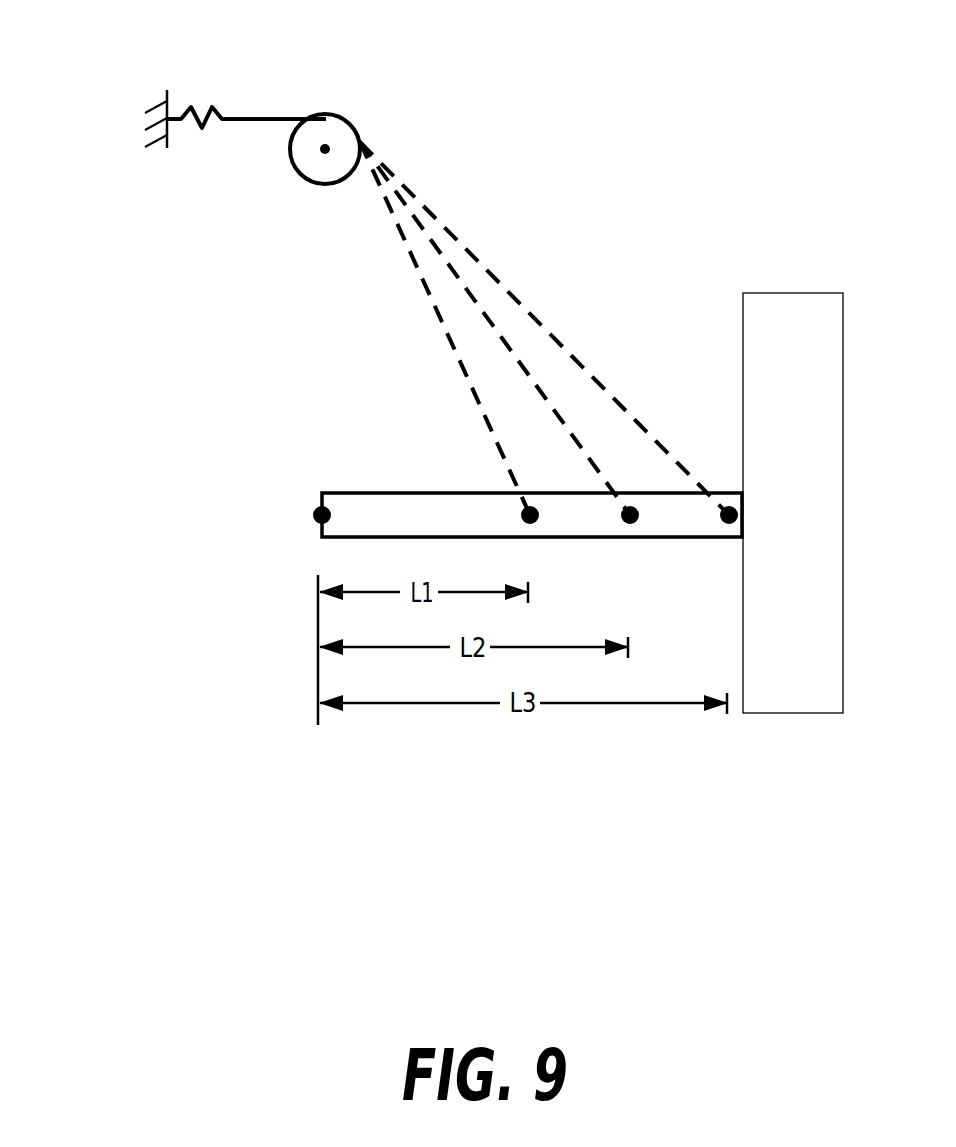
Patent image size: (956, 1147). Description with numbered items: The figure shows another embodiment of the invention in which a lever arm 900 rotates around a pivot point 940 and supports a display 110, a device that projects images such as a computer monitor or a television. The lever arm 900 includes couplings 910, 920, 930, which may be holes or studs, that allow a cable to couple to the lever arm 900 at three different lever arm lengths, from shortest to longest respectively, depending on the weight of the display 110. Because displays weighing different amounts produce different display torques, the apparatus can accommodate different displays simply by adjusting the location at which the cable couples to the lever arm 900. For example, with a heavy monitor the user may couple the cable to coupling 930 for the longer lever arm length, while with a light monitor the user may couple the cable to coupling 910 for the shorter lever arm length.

The pivot point 940 is at (211, 271).
The lever arm 900 is at (532, 460).
The coupling 910 is at (449, 359).
The coupling 920 is at (499, 361).
The coupling 930 is at (549, 363).
The display 110 is at (826, 483).